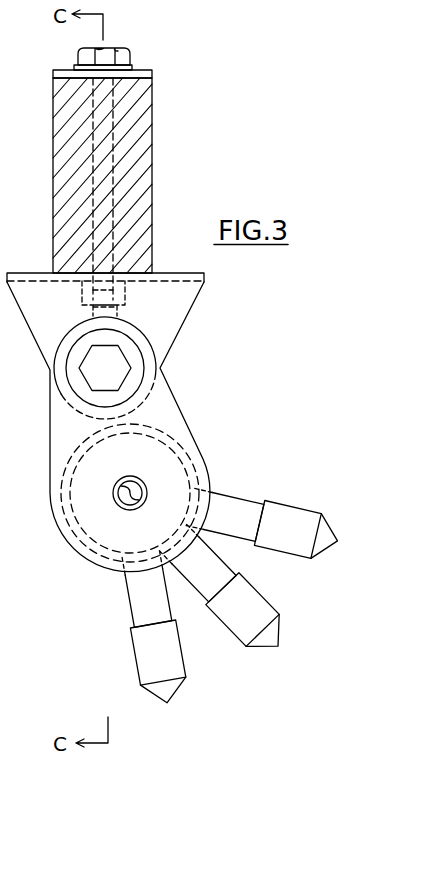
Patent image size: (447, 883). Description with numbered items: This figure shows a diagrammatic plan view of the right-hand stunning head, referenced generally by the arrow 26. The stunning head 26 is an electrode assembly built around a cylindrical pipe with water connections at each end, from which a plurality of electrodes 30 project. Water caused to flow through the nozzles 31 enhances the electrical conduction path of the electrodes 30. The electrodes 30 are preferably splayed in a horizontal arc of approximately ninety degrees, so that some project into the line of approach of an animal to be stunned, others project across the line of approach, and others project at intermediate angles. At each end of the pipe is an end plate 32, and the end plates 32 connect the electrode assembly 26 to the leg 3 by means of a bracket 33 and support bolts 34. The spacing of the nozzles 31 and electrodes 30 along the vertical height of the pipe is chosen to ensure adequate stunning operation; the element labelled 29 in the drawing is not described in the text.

The leg 3 is at (140, 181).
The stunning head 26 is at (230, 461).
The tool shank 29 is at (240, 498).
The electrode 30 is at (324, 525).
The nozzle 31 is at (338, 542).
The end plate 32 is at (170, 418).
The bracket 33 is at (172, 328).
The support bolt 34 is at (118, 57).